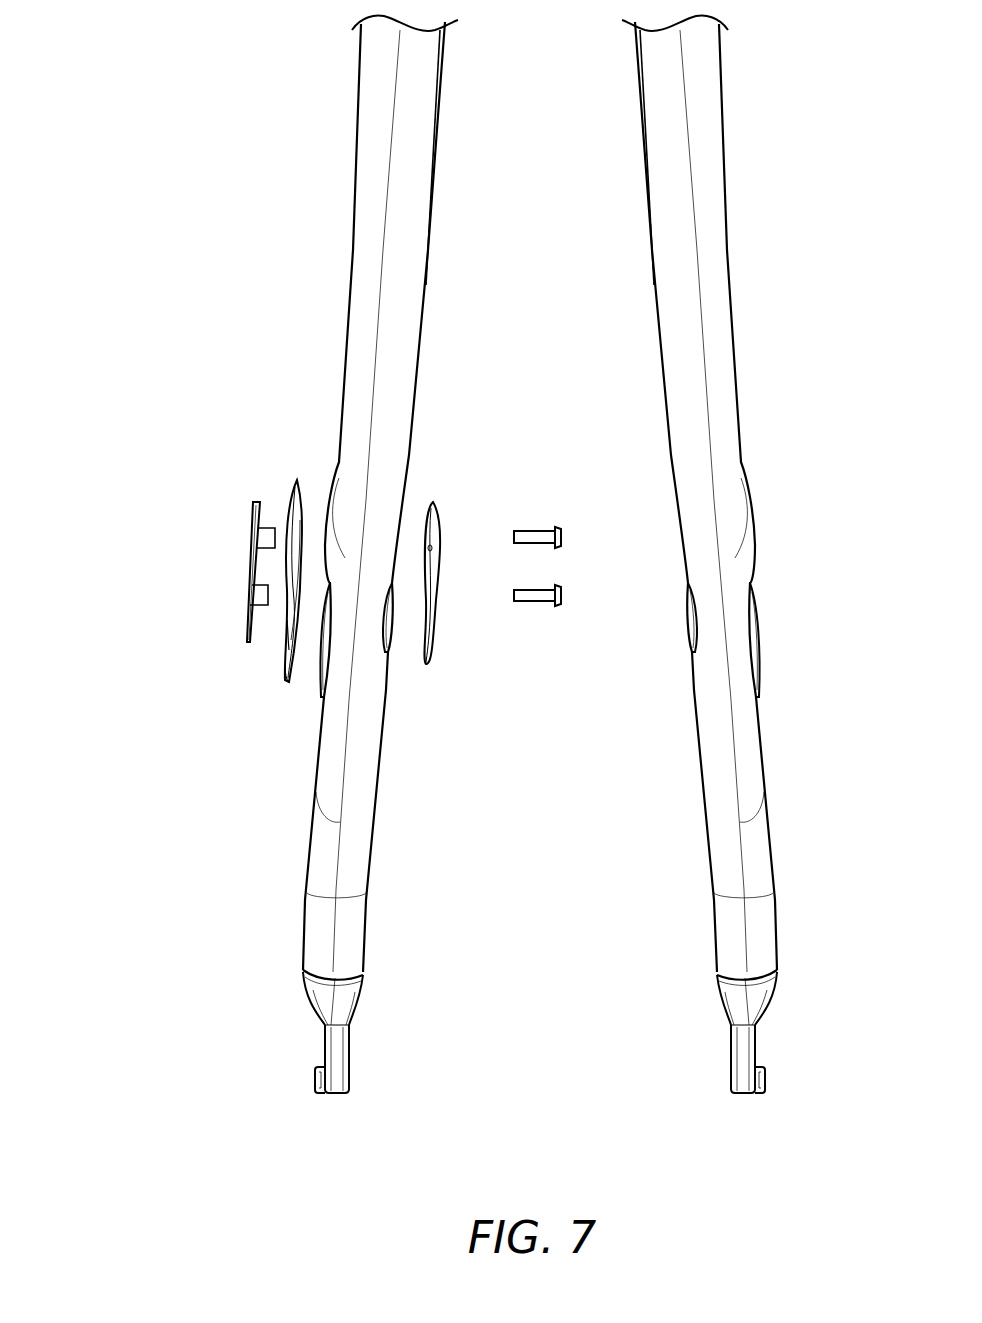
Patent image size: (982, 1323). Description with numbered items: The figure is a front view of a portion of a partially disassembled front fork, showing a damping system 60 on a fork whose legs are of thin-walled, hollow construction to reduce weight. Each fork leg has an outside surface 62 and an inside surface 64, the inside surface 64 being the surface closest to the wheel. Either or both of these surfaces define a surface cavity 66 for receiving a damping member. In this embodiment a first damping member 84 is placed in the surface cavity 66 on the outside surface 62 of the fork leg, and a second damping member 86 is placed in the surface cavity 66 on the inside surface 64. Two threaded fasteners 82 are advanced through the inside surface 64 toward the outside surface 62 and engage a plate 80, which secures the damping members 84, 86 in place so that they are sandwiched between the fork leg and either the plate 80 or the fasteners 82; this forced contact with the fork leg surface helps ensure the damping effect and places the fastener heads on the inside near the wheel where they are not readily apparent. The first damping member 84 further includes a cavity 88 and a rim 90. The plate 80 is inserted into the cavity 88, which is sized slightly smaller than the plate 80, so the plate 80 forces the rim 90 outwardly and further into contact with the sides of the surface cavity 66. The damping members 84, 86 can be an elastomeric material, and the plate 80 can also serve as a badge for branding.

The damping system 60 is at (150, 459).
The outside surface 62 is at (357, 405).
The inside surface 64 is at (407, 397).
The surface cavity 66 is at (325, 680).
The plate 80 is at (250, 557).
The threaded fastener 82 is at (562, 538).
The first damping member 84 is at (292, 495).
The second damping member 86 is at (440, 513).
The cavity 88 is at (286, 628).
The rim 90 is at (290, 665).